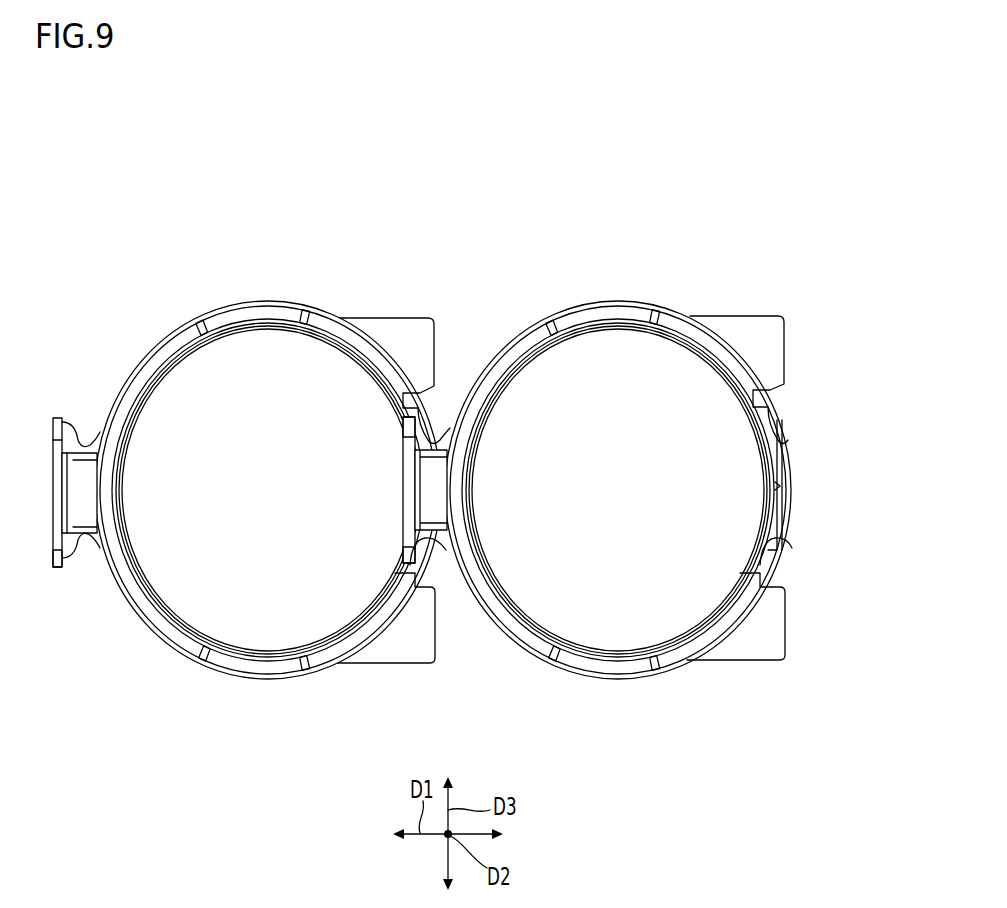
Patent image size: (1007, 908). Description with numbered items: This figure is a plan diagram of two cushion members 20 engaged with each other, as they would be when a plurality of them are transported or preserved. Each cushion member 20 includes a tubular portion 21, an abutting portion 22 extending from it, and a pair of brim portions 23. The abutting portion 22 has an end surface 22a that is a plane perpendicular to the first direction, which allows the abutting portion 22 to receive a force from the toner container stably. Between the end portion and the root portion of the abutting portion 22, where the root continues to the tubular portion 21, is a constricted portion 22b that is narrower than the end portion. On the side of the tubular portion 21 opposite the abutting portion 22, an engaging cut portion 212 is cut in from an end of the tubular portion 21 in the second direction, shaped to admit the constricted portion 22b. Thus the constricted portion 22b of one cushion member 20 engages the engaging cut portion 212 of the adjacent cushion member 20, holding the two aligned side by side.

The cushion member 20 is at (422, 482).
The tubular portion 21 is at (273, 680).
The abutting portion 22 is at (58, 567).
The end surface 22a is at (53, 492).
The constricted portion 22b is at (82, 447).
The brim portions 23 is at (412, 318).
The engaging cut portion 212 is at (428, 543).